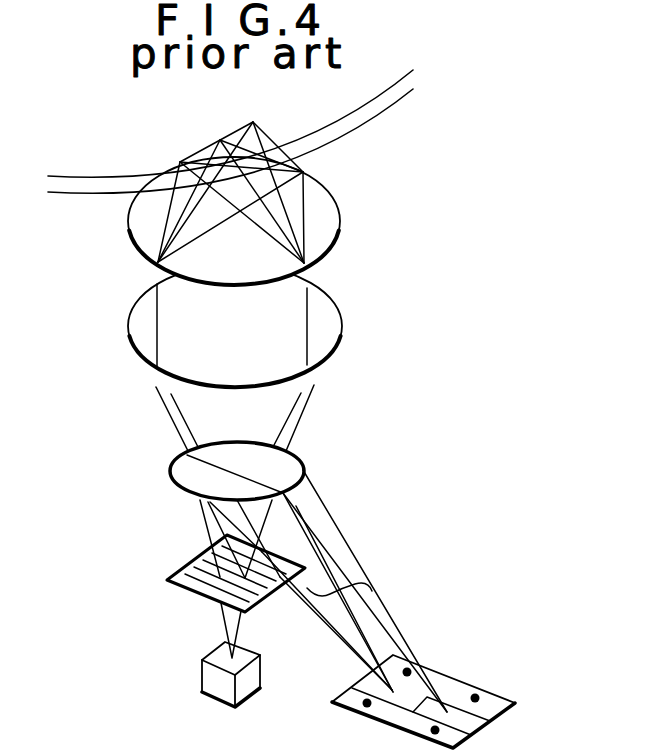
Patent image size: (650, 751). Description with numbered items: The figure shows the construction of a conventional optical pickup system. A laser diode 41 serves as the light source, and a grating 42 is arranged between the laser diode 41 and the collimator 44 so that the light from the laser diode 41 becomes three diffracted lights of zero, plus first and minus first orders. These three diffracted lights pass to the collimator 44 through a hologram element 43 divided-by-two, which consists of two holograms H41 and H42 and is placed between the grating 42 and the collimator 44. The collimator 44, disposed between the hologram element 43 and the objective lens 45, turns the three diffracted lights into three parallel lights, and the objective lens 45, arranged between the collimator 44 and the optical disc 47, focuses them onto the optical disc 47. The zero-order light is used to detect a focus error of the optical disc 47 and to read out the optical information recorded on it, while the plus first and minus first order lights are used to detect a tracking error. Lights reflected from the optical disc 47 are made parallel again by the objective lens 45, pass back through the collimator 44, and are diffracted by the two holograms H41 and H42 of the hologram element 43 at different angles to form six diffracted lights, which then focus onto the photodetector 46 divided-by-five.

The laser diode 41 is at (210, 677).
The grating 42 is at (193, 570).
The hologram element divided-by-two 43 is at (277, 577).
The collimator 44 is at (167, 315).
The objective lens 45 is at (147, 208).
The photodetector divided-by-five 46 is at (437, 670).
The optical disc 47 is at (358, 83).
The hologram H41 is at (188, 472).
The hologram H42 is at (255, 462).